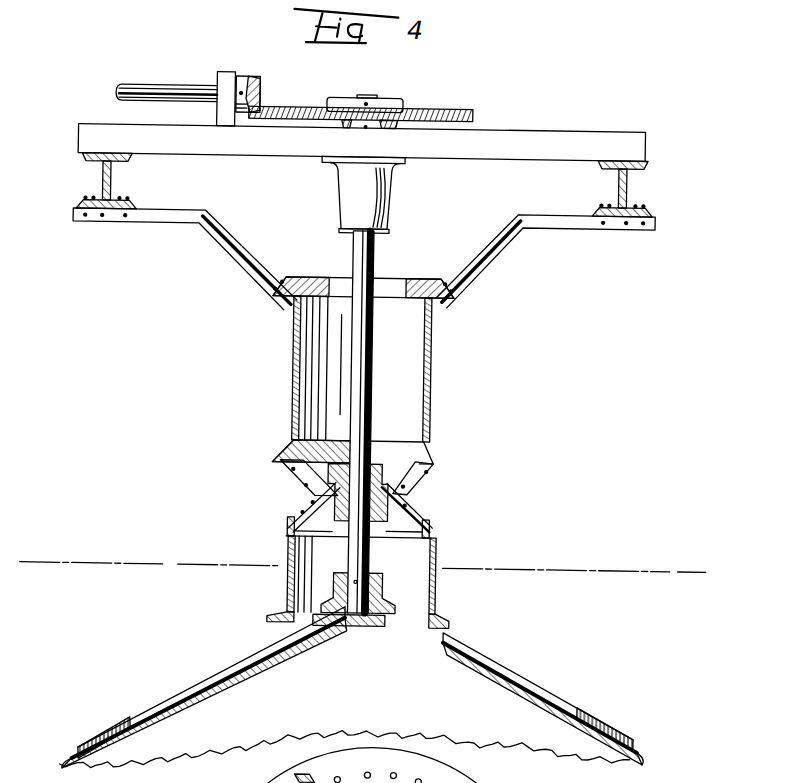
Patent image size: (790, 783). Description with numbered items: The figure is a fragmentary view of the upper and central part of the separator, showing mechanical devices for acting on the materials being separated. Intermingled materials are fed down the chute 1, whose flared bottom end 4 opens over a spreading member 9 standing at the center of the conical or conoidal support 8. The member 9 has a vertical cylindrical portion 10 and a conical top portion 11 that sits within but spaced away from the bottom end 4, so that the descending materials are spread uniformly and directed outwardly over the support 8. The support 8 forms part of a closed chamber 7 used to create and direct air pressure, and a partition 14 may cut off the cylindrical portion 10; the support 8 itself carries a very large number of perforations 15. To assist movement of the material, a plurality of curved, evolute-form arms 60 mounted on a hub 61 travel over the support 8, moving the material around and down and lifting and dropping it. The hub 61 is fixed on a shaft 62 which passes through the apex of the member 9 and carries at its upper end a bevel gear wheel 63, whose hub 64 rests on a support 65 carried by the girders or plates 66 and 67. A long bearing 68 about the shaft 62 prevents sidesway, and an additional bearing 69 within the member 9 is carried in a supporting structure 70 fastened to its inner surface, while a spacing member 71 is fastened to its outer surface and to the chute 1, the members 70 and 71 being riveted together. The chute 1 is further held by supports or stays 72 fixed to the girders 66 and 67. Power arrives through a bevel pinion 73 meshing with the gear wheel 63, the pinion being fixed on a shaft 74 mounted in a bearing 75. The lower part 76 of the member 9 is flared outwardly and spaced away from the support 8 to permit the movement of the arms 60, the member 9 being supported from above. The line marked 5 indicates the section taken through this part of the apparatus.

The chute 1 is at (429, 351).
The bottom end of chute 4 is at (444, 459).
The section line 5- 5 is at (65, 561).
The closed chamber 7 is at (431, 689).
The conical or conoidal support 8 is at (207, 680).
The spreading member 9 is at (297, 544).
The vertical cylindrical portion 10 is at (405, 554).
The top or conical portion 11 is at (401, 477).
The partition 14 is at (365, 627).
The perforations 15 is at (217, 670).
The arms 60 is at (151, 701).
The hub 61 is at (385, 587).
The shaft 62 is at (362, 403).
The bevel gear wheel 63 is at (307, 86).
The hub of bevel gear wheel 64 is at (385, 116).
The support 65 is at (531, 135).
The girder or plate 66 is at (108, 186).
The girder or plate 67 is at (623, 188).
The long bearing 68 is at (378, 195).
The additional bearing 69 is at (389, 512).
The supporting structure 70 is at (314, 511).
The spacing member 71 is at (298, 471).
The supports or stays 72 is at (224, 249).
The bevel pinion 73 is at (253, 82).
The shaft 74 is at (158, 93).
The bearing 75 is at (219, 52).
The lower part of member 76 is at (446, 616).